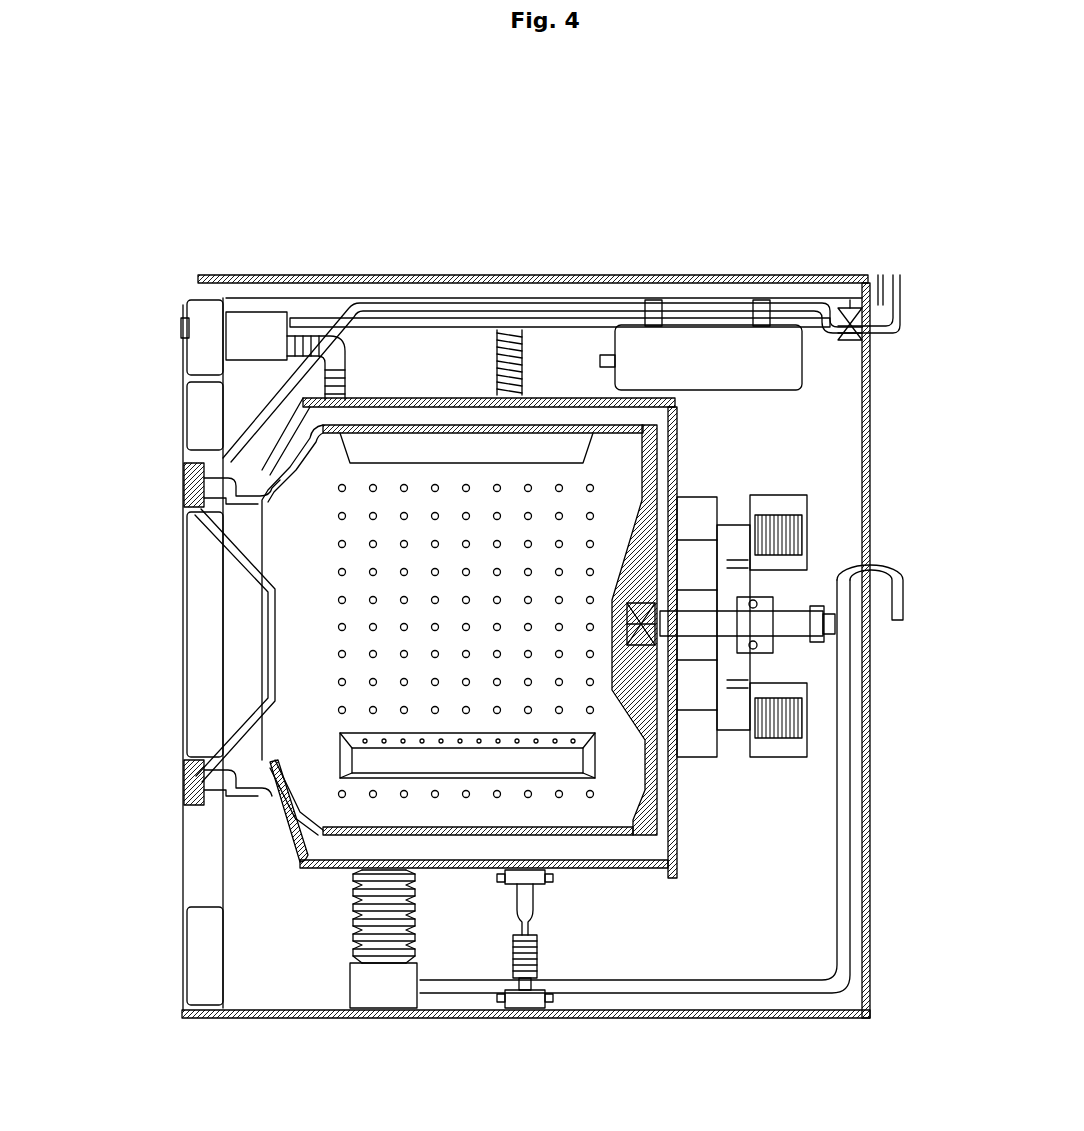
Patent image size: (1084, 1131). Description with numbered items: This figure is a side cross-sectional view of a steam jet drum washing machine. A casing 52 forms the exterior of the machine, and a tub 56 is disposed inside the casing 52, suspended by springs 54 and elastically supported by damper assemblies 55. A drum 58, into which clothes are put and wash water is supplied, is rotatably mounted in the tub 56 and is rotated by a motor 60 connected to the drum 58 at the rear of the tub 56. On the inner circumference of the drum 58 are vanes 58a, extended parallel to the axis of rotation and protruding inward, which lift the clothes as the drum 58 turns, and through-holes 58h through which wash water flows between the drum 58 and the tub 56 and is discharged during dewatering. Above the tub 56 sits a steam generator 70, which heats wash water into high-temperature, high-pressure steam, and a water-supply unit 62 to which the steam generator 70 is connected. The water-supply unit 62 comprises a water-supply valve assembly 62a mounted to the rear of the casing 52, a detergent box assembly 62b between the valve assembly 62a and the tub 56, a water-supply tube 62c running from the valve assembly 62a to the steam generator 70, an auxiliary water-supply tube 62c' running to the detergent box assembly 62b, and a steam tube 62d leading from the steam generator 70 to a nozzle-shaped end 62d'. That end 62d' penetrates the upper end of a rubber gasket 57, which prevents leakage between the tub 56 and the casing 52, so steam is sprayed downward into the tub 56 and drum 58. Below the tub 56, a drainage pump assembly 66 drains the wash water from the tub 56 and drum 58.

The casing 52 is at (870, 438).
The springs 54 is at (498, 352).
The damper assemblies 55 is at (548, 946).
The tub 56 is at (300, 855).
The gasket 57 is at (215, 487).
The drum 58 is at (285, 797).
The vanes 58a is at (340, 750).
The through-holes 58h is at (338, 573).
The motor 60 is at (818, 529).
The water-supply unit 62 is at (838, 195).
The water-supply valve assembly 62a is at (835, 300).
The detergent box assembly 62b is at (275, 305).
The water-supply tube 62c is at (816, 266).
The auxiliary water-supply tube 62c' is at (542, 331).
The steam tube 62d is at (560, 263).
The end of the steam tube 62d' is at (171, 637).
The drainage pump assembly 66 is at (350, 985).
The steam generator 70 is at (815, 359).